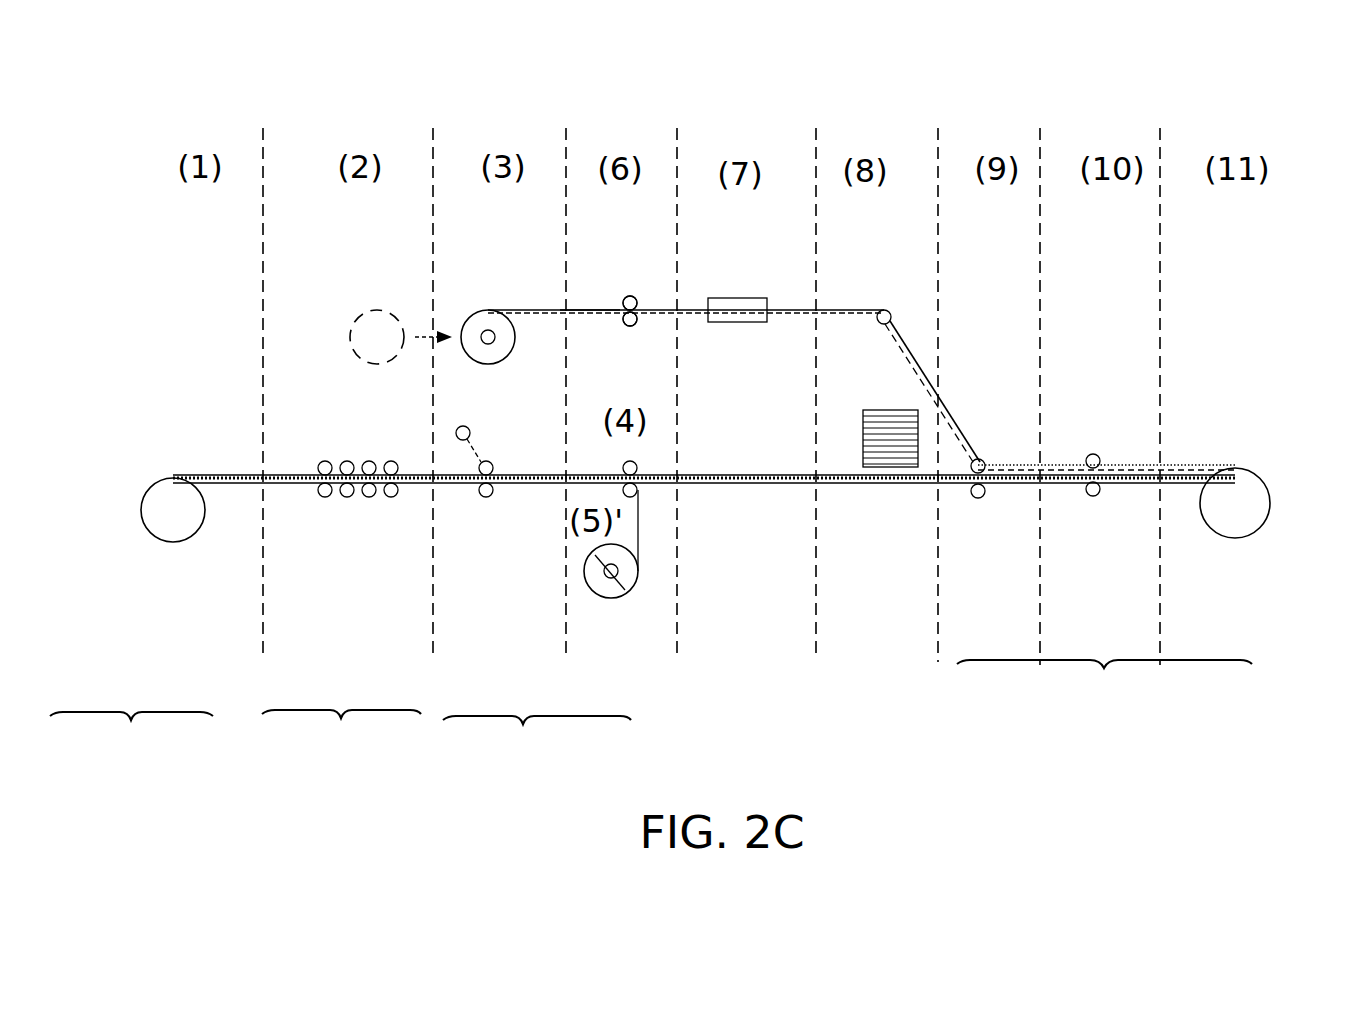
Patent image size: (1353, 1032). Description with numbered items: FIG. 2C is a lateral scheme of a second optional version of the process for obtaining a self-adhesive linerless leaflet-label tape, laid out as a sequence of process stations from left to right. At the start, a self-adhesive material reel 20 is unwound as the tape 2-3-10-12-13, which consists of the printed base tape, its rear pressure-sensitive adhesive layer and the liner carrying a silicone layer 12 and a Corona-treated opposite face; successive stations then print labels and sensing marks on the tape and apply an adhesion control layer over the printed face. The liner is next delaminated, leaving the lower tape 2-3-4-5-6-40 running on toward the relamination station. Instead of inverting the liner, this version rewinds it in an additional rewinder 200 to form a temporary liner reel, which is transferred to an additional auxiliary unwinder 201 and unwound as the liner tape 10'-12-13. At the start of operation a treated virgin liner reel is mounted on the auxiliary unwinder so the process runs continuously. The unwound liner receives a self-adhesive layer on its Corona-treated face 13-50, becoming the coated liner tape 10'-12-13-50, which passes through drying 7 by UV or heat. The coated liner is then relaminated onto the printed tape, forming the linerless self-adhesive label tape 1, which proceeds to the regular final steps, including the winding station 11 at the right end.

The linerless self-adhesive label tape 1 is at (1104, 693).
The drying step 7 is at (905, 440).
The final process step 11 is at (1235, 503).
The silicone layer 12 is at (664, 310).
The Corona-treated liner face with self-adhesive layer 13-50 is at (665, 316).
The self-adhesive material reel 20 is at (324, 619).
The additional rewinder 200 is at (618, 571).
The additional auxiliary unwinder 201 is at (490, 340).
The temporary liner tape with silicone layer and Corona treatment 10'-12-13 is at (568, 449).
The temporary liner tape with silicone, Corona treatment and self-adhesive layer 10'-12-13-50 is at (998, 359).
The delaminated printed tape with adhesive, labels, spaces, sensing marks and adhesi 2-3-4-5-6-40 is at (782, 483).
The unwound self-adhesive material tape 2-3-10-12-13 is at (175, 510).